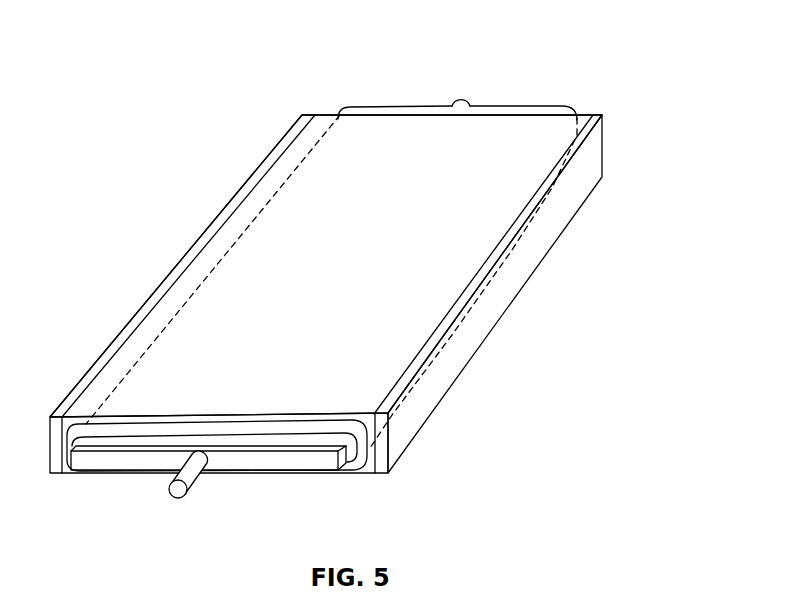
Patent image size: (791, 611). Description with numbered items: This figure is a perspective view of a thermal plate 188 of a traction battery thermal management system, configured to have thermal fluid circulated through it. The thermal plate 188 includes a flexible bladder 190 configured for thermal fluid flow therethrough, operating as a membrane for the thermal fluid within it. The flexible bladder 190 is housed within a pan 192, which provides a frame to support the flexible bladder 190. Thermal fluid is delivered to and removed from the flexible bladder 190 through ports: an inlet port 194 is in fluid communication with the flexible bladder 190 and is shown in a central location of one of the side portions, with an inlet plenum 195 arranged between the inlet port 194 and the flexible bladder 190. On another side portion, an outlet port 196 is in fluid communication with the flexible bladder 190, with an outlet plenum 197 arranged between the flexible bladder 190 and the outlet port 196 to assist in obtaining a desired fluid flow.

The thermal plate 188 is at (55, 162).
The flexible bladder 190 is at (315, 215).
The pan 192 is at (53, 476).
The inlet port 194 is at (193, 473).
The inlet plenum 195 is at (332, 462).
The outlet port 196 is at (459, 93).
The outlet plenum 197 is at (562, 112).